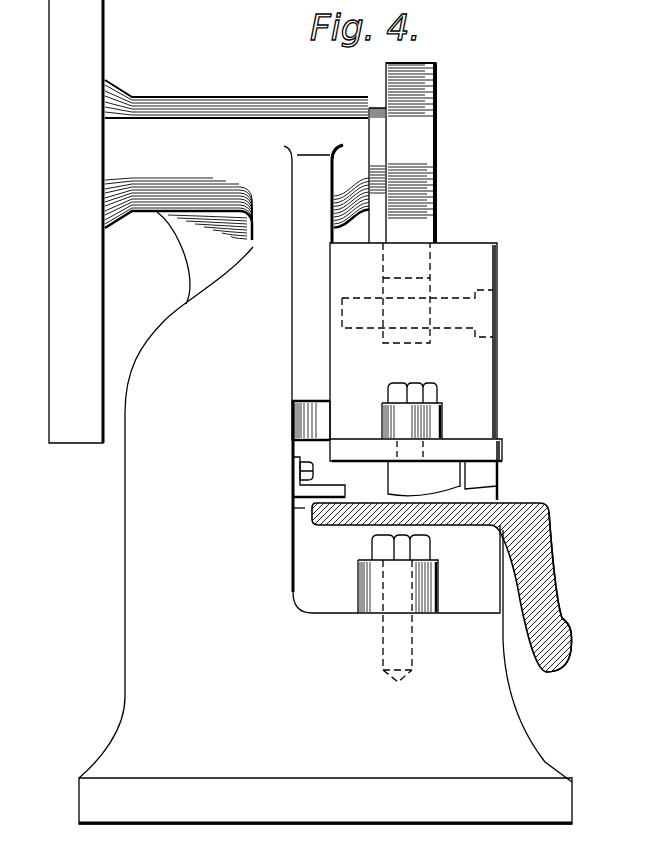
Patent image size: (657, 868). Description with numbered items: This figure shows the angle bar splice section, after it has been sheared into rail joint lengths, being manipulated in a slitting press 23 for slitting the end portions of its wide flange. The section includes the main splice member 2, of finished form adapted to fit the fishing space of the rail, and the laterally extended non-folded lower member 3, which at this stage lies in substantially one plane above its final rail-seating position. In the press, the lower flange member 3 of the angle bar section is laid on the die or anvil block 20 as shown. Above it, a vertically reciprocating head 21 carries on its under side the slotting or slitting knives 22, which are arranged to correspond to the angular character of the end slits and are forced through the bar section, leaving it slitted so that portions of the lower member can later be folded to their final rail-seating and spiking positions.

The main splice member 2 is at (540, 587).
The lower member 3 is at (333, 525).
The die or anvil block 20 is at (302, 577).
The vertically reciprocating head 21 is at (481, 368).
The slotting or slitting knives 22 is at (447, 475).
The slitting press 23 is at (443, 153).